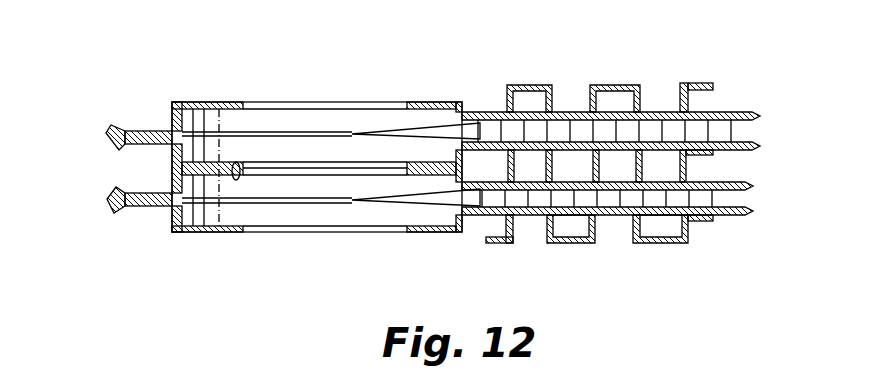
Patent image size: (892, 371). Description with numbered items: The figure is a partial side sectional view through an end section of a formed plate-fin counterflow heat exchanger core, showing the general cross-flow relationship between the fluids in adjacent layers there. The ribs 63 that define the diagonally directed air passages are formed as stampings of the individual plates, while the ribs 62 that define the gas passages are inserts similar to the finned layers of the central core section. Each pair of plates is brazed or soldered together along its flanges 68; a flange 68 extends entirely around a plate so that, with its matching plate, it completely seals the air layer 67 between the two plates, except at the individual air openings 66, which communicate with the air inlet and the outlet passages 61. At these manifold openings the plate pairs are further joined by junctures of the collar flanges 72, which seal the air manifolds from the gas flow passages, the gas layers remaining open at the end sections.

The outlet passages 61 is at (306, 244).
The ribs 62 is at (532, 86).
The ribs 63 is at (575, 133).
The air openings 66 is at (417, 197).
The air passage layers 67 is at (748, 133).
The flanges 68 is at (108, 130).
The collar flanges 72 is at (237, 163).